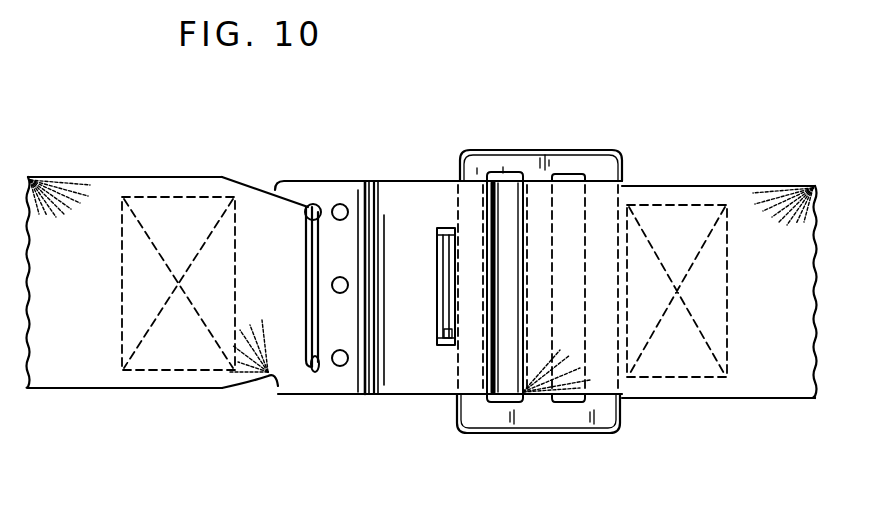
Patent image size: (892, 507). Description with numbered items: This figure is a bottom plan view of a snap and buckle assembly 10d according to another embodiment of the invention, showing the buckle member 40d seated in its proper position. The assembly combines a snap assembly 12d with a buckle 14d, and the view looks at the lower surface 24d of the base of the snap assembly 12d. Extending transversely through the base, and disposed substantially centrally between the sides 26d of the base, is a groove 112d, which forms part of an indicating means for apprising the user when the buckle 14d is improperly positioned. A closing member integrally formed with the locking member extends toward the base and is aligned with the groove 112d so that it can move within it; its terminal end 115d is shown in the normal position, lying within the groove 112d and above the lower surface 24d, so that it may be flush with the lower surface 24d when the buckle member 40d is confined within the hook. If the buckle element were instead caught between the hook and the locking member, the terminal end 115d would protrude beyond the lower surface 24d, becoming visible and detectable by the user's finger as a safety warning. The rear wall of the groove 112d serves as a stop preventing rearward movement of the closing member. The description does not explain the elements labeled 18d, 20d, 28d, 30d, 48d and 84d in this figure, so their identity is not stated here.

The snap and buckle assembly 10d is at (648, 159).
The snap assembly 12d is at (378, 182).
The buckle 14d is at (688, 400).
The slot 18d is at (496, 195).
The strap end tab 20d is at (275, 186).
The lower surface 24d is at (420, 195).
The sides 26d is at (352, 160).
The strap loop 28d is at (313, 372).
The first strap 30d is at (87, 177).
The buckle member 40d is at (615, 433).
The strap free end 48d is at (780, 400).
The rivets 84d is at (306, 213).
The groove 112d is at (441, 331).
The terminal end 115d is at (448, 285).